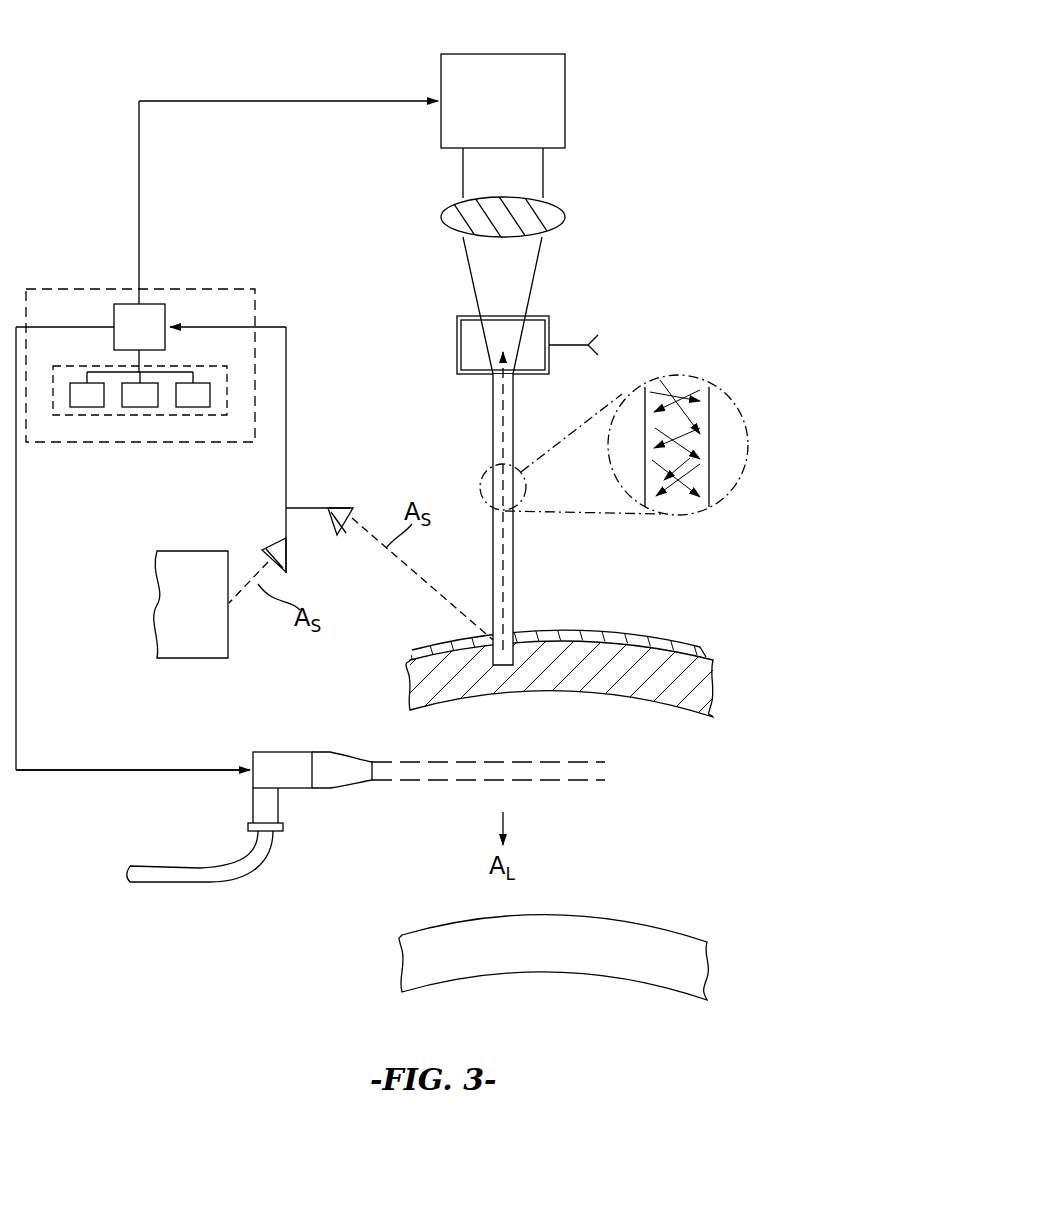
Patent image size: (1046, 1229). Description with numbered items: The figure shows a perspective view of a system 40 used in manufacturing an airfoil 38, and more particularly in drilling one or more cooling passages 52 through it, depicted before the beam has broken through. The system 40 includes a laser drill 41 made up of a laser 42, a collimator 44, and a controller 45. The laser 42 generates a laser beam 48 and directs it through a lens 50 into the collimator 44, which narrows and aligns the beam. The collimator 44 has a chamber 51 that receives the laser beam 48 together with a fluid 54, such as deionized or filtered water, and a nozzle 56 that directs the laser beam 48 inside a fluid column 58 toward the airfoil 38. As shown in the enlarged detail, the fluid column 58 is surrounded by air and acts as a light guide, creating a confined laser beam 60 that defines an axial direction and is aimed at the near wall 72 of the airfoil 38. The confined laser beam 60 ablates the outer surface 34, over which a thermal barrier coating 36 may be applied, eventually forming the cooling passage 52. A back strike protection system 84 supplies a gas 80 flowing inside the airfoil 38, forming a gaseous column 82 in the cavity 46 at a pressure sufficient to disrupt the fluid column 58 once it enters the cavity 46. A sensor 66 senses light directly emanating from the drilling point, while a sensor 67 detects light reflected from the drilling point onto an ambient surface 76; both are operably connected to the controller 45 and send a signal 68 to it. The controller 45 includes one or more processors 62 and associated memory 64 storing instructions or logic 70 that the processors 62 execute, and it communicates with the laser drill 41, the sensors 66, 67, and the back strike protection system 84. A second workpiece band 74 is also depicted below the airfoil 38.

The outer surface 34 is at (672, 658).
The thermal barrier coating 36 is at (446, 640).
The airfoil 38 is at (762, 690).
The system 40 is at (88, 95).
The laser drill 41 is at (665, 235).
The laser 42 is at (352, 179).
The collimator 44 is at (447, 321).
The controller 45 is at (82, 289).
The cavity 46 is at (697, 751).
The laser beam 48 is at (543, 172).
The lens 50 is at (552, 230).
The chamber 51 is at (470, 375).
The cooling passage 52 is at (508, 664).
The fluid 54 is at (591, 346).
The nozzle 56 is at (518, 376).
The fluid column 58 is at (493, 463).
The confined laser beam 60 is at (688, 468).
The processor 62 is at (139, 338).
The memory 64 is at (62, 415).
The sensor 66 is at (340, 507).
The sensor 67 is at (280, 546).
The signal 68 is at (286, 408).
The instructions or logic 70 is at (85, 407).
The near wall 72 is at (630, 621).
The second workpiece 74 is at (668, 1024).
The ambient surface 76 is at (245, 652).
The gas 80 is at (448, 793).
The gaseous column 82 is at (446, 752).
The back strike protection system 84 is at (240, 722).